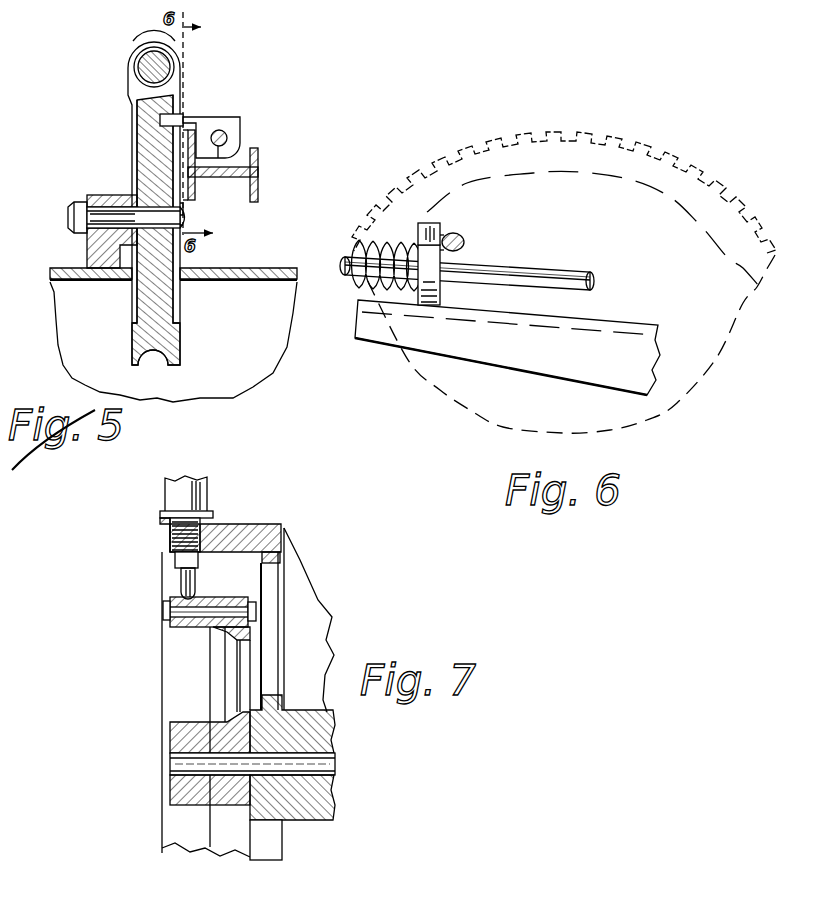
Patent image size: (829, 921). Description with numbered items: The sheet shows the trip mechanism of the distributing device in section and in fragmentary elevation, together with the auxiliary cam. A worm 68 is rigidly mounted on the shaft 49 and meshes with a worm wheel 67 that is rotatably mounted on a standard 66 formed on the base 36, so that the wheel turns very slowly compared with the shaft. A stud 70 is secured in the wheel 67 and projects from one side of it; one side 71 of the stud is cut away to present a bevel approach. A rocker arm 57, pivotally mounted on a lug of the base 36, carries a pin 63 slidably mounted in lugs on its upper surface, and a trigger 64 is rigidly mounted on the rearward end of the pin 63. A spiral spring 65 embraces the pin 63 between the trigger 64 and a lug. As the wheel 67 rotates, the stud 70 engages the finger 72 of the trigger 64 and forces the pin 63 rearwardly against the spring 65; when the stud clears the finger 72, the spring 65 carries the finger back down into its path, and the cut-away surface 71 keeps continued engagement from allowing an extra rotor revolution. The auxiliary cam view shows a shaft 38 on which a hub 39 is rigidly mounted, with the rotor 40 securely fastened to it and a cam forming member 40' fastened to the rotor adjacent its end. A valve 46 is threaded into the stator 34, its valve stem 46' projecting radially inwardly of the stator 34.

In FIG. 5, the worm 68 is at (150, 43).
In FIG. 5, the shaft 49 is at (147, 68).
In FIG. 5, the worm wheel 67 is at (147, 155).
In FIG. 6, the worm wheel 67 is at (677, 157).
In FIG. 5, the stud 70 is at (165, 118).
In FIG. 6, the stud 70 is at (462, 247).
In FIG. 5, the trigger 64 is at (240, 120).
In FIG. 6, the trigger 64 is at (430, 289).
In FIG. 5, the pin 63 is at (227, 138).
In FIG. 6, the pin 63 is at (553, 274).
In FIG. 5, the rocker arm 57 is at (258, 186).
In FIG. 6, the rocker arm 57 is at (494, 352).
In FIG. 5, the finger 72 is at (188, 147).
In FIG. 6, the finger 72 is at (419, 228).
In FIG. 5, the standard 66 is at (87, 247).
In FIG. 5, the base 36 is at (263, 268).
In FIG. 6, the cut away side 71 is at (455, 232).
In FIG. 6, the spiral spring 65 is at (353, 250).
In FIG. 7, the valve 46 is at (205, 504).
In FIG. 7, the stator 34 is at (243, 530).
In FIG. 7, the rotor 40 is at (257, 594).
In FIG. 7, the valve stem 46' is at (146, 575).
In FIG. 7, the cam forming member 40' is at (175, 704).
In FIG. 7, the shaft 38 is at (177, 765).
In FIG. 7, the hub 39 is at (180, 795).